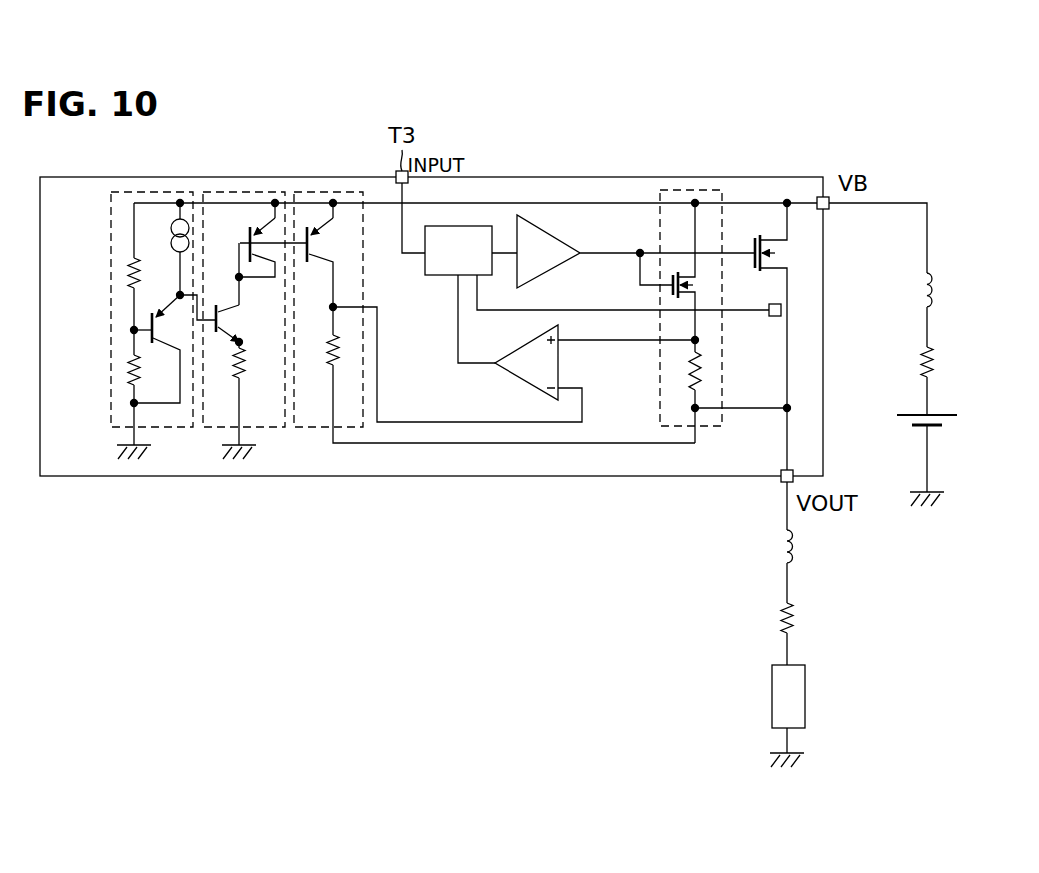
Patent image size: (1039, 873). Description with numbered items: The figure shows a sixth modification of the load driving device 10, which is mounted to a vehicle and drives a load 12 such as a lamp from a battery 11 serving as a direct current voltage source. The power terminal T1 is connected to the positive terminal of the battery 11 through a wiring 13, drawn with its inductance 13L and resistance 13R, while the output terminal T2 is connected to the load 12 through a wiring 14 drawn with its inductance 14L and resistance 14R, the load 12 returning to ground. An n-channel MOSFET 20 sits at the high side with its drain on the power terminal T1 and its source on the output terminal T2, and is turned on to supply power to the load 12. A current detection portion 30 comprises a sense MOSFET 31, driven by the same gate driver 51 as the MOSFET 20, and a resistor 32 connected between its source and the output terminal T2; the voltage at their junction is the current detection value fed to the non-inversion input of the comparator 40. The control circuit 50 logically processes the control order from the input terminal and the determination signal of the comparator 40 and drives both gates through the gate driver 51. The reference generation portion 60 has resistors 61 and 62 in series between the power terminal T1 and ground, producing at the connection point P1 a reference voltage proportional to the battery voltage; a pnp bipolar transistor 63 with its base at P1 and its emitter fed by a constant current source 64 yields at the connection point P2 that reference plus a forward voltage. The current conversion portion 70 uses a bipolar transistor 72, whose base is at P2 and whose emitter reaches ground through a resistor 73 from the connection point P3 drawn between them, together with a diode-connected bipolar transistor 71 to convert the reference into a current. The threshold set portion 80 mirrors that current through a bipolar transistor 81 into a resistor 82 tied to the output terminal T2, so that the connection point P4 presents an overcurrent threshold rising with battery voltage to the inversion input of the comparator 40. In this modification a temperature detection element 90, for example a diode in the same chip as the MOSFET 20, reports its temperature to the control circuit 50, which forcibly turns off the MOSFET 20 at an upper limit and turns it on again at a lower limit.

The load driving device 10 is at (793, 177).
The battery 11 is at (955, 414).
The load 12 is at (806, 696).
The wiring 13 is at (898, 203).
The inductance 13L is at (938, 284).
The resistance 13R is at (938, 358).
The wiring 14 is at (787, 578).
The inductance 14L is at (800, 542).
The resistance 14R is at (800, 614).
The MOSFET 20 is at (793, 254).
The current detection portion 30 is at (710, 190).
The MOSFET 31 is at (692, 288).
The resistor 32 is at (702, 366).
The comparator 40 is at (526, 346).
The control circuit 50 is at (478, 226).
The gate driver 51 is at (545, 225).
The reference generation portion 60 is at (150, 192).
The resistor 61 is at (130, 274).
The resistor 62 is at (128, 370).
The bipolar transistor 63 is at (163, 345).
The constant current source 64 is at (171, 234).
The current conversion portion 70 is at (240, 192).
The bipolar transistor 71 is at (265, 236).
The bipolar transistor 72 is at (222, 306).
The resistor 73 is at (245, 370).
The threshold set portion 80 is at (345, 192).
The bipolar transistor 81 is at (320, 236).
The resistor 82 is at (329, 349).
The temperature detection element 90 is at (784, 310).
The connection point P1 is at (130, 330).
The connection point P2 is at (179, 292).
The node P3 is at (243, 344).
The connection point P4 is at (338, 306).
The power terminal T1 is at (829, 208).
The output terminal T2 is at (780, 483).